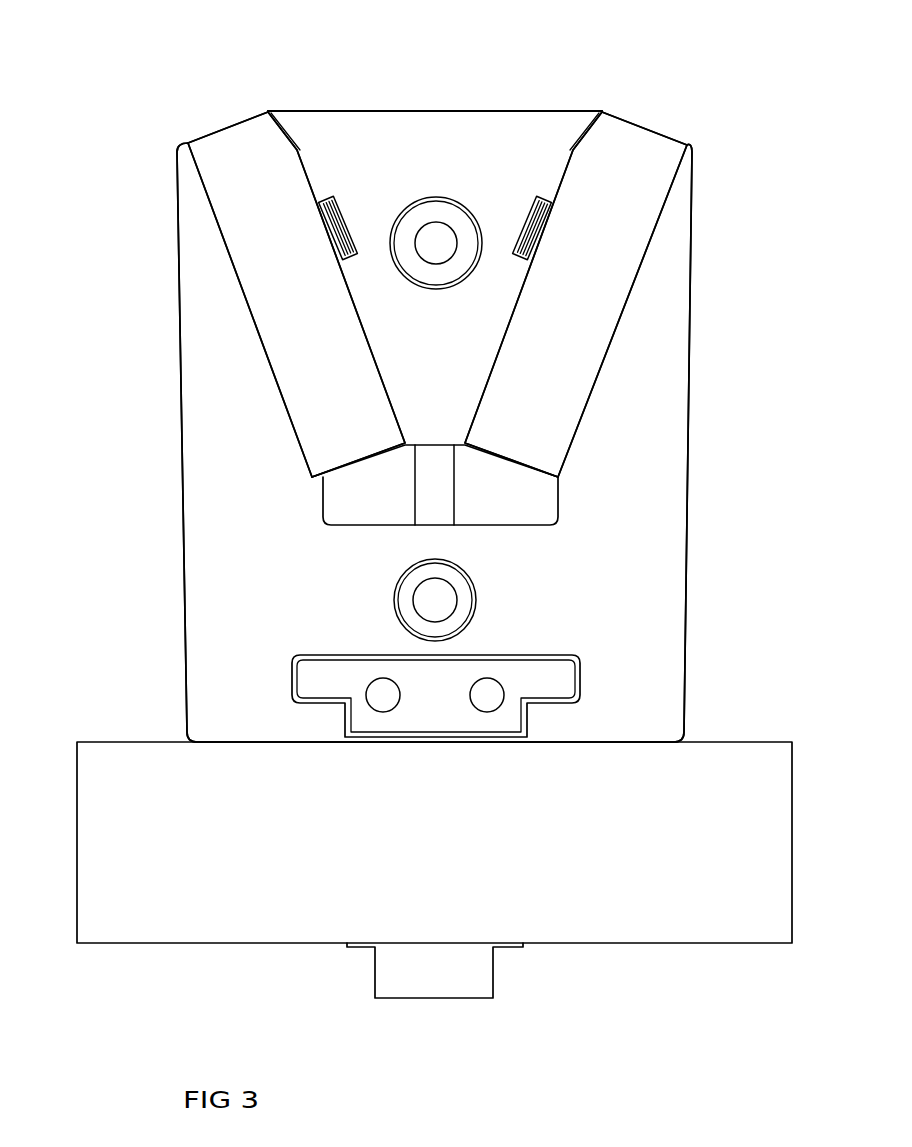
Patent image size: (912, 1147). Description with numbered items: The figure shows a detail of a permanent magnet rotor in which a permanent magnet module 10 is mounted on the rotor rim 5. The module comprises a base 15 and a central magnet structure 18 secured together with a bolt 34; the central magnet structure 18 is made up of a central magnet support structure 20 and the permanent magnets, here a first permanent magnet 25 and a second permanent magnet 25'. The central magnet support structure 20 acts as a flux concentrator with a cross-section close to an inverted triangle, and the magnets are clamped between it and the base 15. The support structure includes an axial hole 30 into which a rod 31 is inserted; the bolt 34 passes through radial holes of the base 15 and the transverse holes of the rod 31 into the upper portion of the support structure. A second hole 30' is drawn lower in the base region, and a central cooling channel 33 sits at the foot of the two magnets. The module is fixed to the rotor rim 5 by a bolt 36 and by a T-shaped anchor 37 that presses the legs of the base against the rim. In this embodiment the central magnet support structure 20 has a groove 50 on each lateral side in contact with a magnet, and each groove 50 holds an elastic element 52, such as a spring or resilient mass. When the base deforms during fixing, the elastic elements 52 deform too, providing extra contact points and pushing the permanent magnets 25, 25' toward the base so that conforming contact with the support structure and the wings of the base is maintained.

The rotor rim 5 is at (720, 742).
The permanent magnet module 10 is at (148, 416).
The base 15 is at (686, 352).
The central magnet structure 18 is at (579, 98).
The central magnet support structure 20 is at (467, 110).
The first permanent magnet 25 is at (595, 253).
The second permanent magnet 25' is at (272, 252).
The axial hole 30 is at (451, 221).
The bearing 30' is at (482, 593).
The rod 31 is at (445, 225).
The central cooling channel 33 is at (345, 498).
The bolt 34 is at (450, 496).
The bolt 36 is at (494, 998).
The anchor 37 is at (542, 672).
The groove 50 is at (340, 210).
The elastic element 52 is at (323, 232).